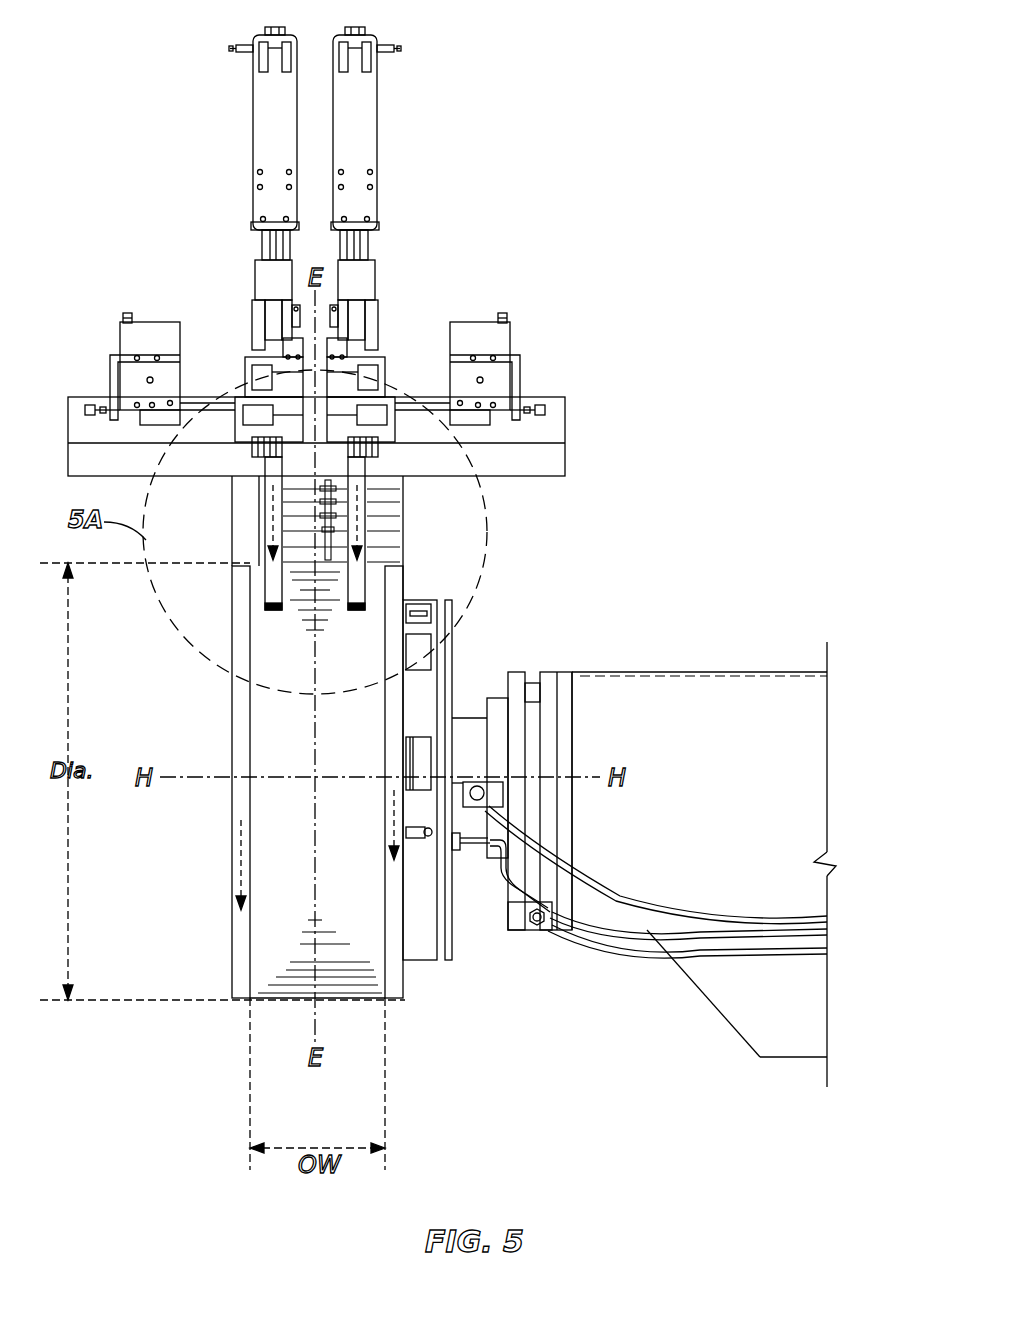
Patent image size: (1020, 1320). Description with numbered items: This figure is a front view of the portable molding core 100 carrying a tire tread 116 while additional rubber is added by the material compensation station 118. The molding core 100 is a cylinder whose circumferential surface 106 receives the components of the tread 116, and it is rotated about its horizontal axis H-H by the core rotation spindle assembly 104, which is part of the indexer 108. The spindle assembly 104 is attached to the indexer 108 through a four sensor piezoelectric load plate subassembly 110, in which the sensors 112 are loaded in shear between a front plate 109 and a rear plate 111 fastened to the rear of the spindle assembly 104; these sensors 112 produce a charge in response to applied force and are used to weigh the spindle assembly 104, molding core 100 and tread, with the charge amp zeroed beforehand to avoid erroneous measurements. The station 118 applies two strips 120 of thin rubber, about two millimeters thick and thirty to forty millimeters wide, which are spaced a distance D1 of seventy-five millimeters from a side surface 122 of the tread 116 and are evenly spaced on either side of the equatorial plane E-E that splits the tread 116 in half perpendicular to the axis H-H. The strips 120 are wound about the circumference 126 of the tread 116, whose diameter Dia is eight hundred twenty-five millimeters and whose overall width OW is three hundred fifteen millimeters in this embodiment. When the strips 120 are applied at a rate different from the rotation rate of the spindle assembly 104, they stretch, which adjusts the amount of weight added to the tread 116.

The portable molding core 100 is at (411, 998).
The core rotation spindle assembly 104 is at (452, 585).
The circumferential surface 106 is at (237, 938).
The indexer 108 is at (800, 720).
The front plate 109 is at (507, 690).
The four sensor piezoelectric load plate subassembly 110 is at (552, 640).
The rear plate 111 is at (572, 672).
The sensors 112 is at (531, 683).
The tire tread 116 is at (303, 767).
The material compensation station 118 is at (398, 328).
The strips of thin rubber 120 is at (262, 513).
The side surface 122 is at (385, 597).
The circumference 126 is at (303, 887).